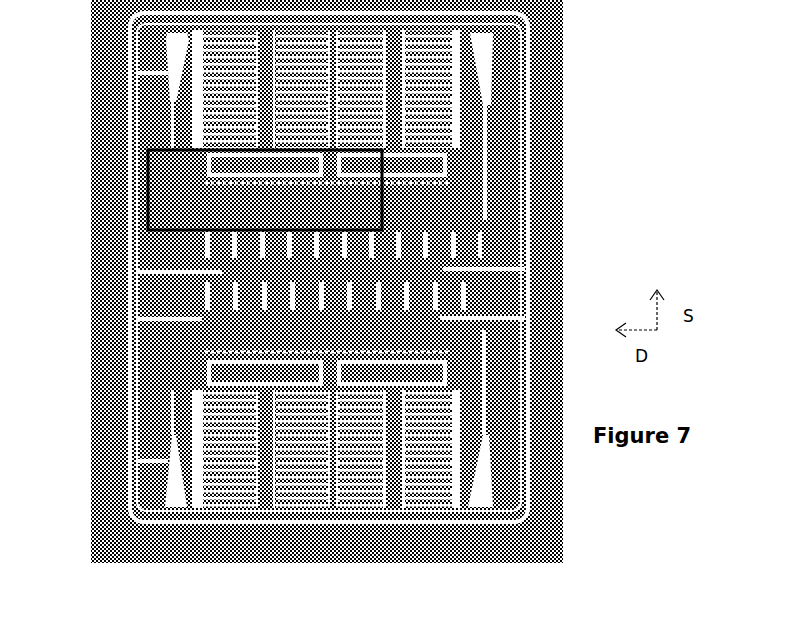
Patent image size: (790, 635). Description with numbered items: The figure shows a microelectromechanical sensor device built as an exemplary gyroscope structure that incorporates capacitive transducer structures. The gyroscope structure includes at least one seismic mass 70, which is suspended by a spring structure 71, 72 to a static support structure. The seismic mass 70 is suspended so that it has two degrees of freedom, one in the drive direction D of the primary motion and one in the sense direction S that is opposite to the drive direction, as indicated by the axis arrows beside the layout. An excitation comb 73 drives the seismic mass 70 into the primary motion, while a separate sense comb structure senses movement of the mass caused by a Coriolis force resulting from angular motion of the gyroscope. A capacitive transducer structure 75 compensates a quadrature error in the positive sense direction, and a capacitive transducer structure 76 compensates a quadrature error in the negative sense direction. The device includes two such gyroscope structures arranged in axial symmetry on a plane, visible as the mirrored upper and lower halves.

The seismic mass 70 is at (482, 78).
The spring structure 71 is at (494, 33).
The spring structure 72 is at (530, 192).
The excitation comb 73 is at (446, 303).
The capacitive transducer structure 75 is at (452, 192).
The capacitive transducer structure 76 is at (166, 178).